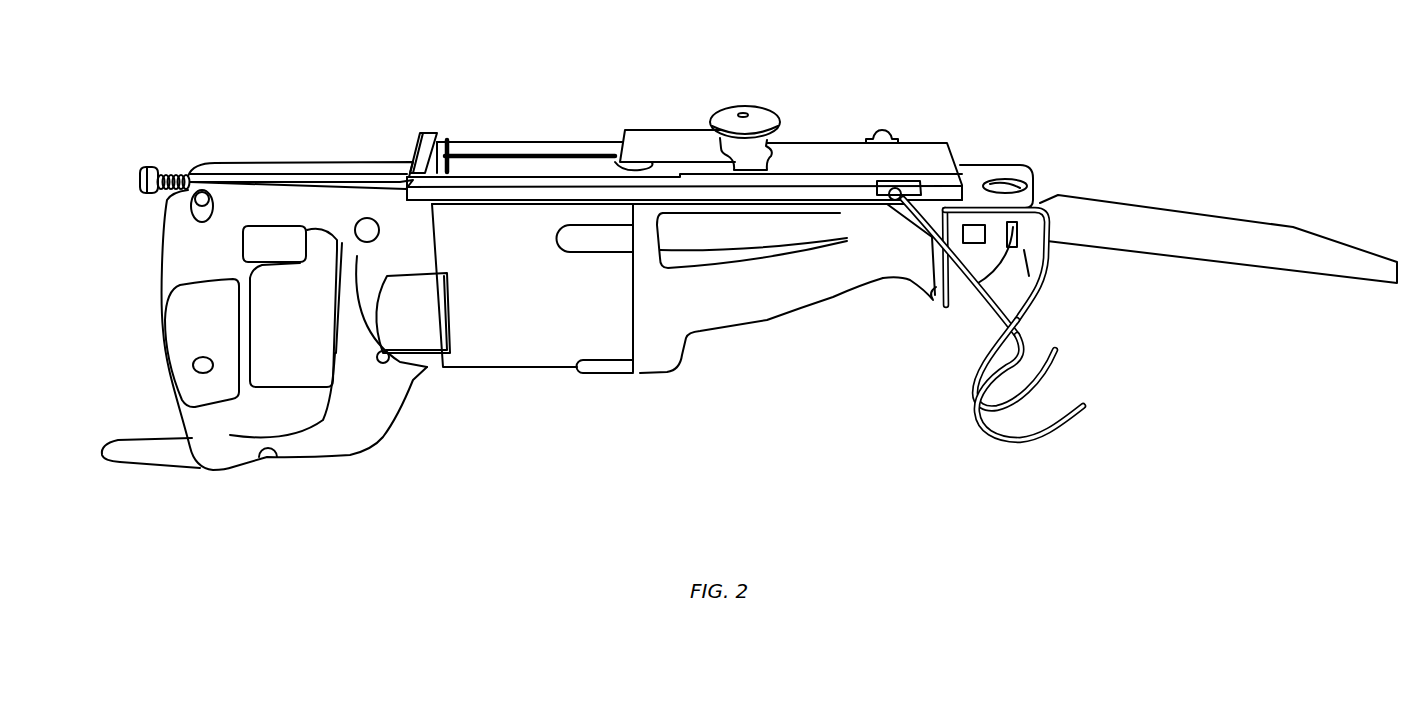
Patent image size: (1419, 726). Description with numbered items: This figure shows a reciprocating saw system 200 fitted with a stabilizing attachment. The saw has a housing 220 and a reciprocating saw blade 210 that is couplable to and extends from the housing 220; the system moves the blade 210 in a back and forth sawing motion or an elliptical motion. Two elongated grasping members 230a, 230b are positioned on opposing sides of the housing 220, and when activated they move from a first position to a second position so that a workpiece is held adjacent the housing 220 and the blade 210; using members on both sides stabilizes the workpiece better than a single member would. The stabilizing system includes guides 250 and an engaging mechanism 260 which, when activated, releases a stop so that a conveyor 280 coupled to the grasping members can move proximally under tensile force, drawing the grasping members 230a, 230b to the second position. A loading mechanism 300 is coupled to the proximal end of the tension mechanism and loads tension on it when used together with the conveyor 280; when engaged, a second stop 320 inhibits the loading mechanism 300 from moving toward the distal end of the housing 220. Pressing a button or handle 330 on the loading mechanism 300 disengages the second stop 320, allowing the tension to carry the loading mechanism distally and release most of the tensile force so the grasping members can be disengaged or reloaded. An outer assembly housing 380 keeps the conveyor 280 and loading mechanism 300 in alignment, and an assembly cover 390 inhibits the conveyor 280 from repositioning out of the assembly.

The reciprocating saw system 200 is at (743, 255).
The reciprocating saw blade 210 is at (1218, 252).
The housing 220 is at (518, 316).
The elongated grasping member 230a is at (1054, 405).
The elongated grasping member 230b is at (1059, 364).
The guides 250 is at (954, 311).
The engaging mechanism 260 is at (140, 161).
The conveyor 280 is at (692, 153).
The loading mechanism 300 is at (675, 135).
The second stop 320 is at (885, 321).
The button or handle 330 is at (755, 123).
The outer assembly housing 380 is at (530, 138).
The assembly cover 390 is at (512, 138).